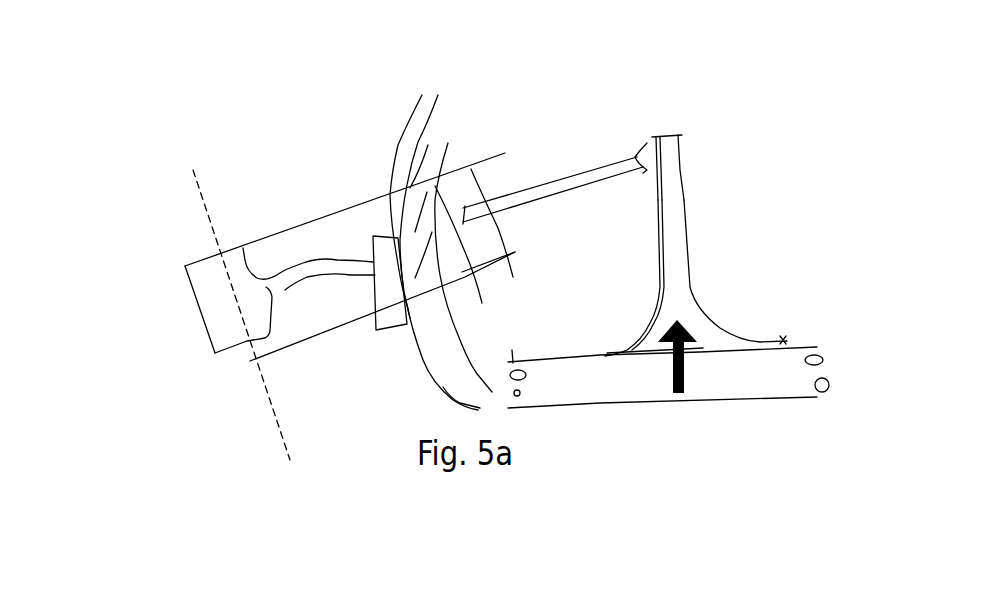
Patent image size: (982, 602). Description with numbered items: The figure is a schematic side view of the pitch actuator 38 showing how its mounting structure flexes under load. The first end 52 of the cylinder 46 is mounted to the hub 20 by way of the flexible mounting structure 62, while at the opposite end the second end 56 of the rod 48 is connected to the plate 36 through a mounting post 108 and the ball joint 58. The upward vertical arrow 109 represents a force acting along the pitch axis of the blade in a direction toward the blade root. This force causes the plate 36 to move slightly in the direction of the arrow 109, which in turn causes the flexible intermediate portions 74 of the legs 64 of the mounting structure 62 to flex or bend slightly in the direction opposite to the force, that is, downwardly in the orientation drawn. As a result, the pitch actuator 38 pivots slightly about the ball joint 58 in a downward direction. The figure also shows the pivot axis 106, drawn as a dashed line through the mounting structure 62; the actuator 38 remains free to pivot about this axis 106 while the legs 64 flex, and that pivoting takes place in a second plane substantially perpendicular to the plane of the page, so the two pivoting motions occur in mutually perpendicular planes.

The hub 20 is at (405, 121).
The plate 36 is at (760, 382).
The pitch actuator 38 is at (335, 178).
The cylinder 46 is at (337, 314).
The rod 48 is at (538, 197).
The first end 52 is at (250, 350).
The second end 56 is at (647, 143).
The ball joint 58 is at (687, 167).
The flexible mounting structure 62 is at (133, 286).
The legs 64 is at (285, 270).
The flexible intermediate portions 74 is at (307, 278).
The pivot axis 106 is at (285, 467).
The mounting post 108 is at (668, 217).
The arrow 109 is at (690, 385).